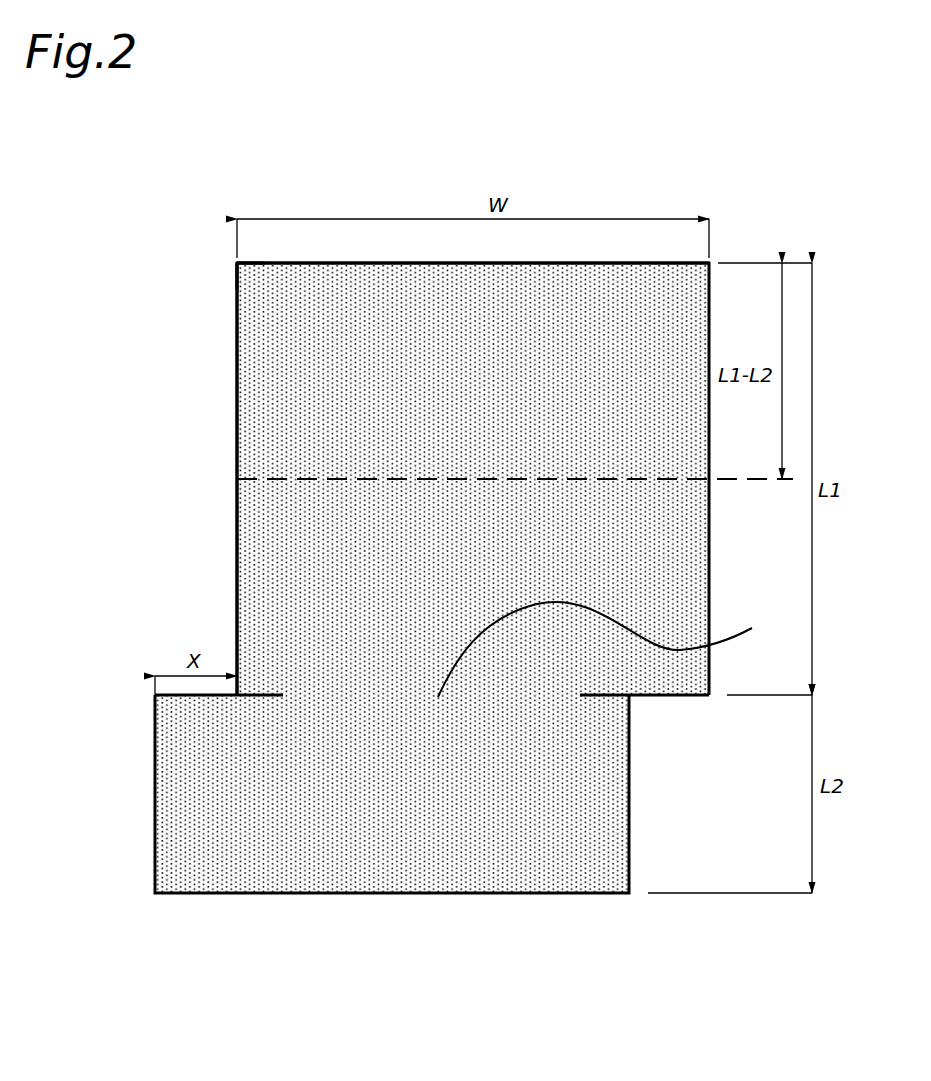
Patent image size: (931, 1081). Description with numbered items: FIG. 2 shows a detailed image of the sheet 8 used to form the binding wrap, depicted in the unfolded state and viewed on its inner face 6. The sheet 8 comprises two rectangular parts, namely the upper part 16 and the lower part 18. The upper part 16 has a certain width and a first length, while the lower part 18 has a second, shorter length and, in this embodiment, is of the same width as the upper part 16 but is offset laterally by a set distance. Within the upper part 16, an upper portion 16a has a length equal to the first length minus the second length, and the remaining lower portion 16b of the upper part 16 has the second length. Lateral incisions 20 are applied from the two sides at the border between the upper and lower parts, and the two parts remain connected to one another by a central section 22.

The inner face 6 is at (643, 300).
The sheet 8 is at (266, 256).
The upper part 16 is at (273, 443).
The upper portion 16a is at (237, 365).
The lower portion 16b is at (237, 557).
The lower part 18 is at (211, 808).
The lateral incisions 20 is at (263, 692).
The central section 22 is at (609, 649).